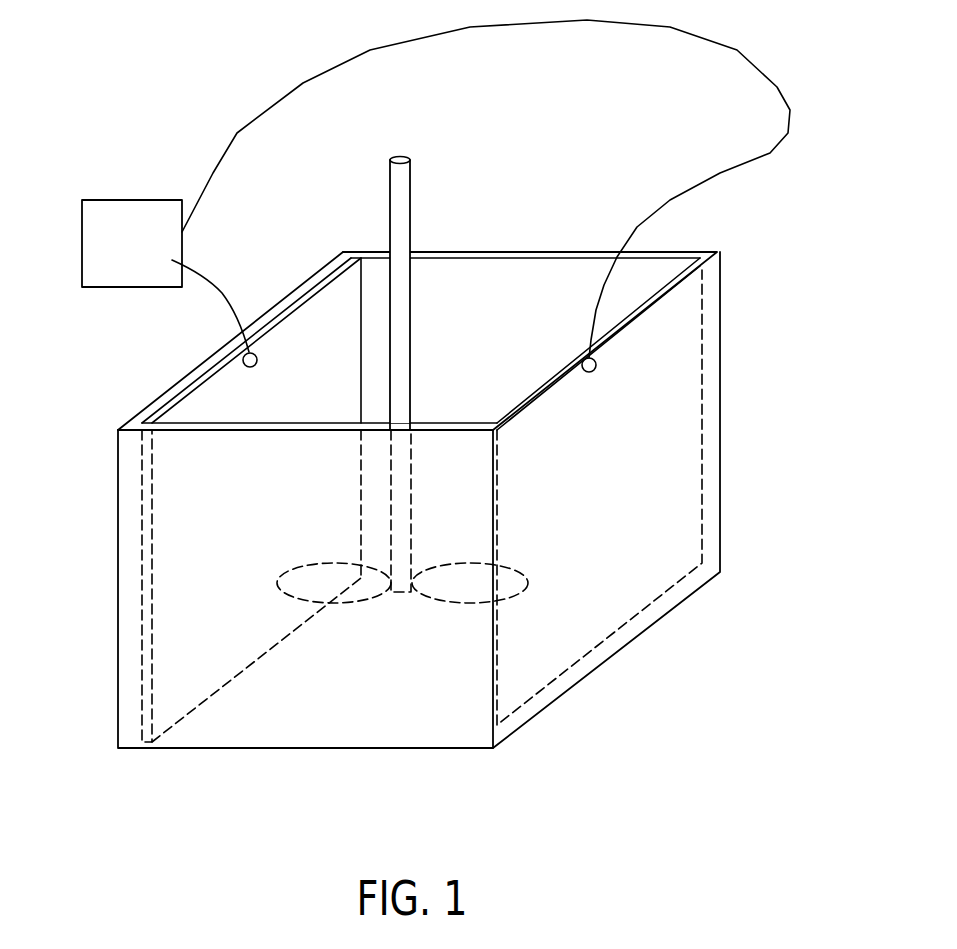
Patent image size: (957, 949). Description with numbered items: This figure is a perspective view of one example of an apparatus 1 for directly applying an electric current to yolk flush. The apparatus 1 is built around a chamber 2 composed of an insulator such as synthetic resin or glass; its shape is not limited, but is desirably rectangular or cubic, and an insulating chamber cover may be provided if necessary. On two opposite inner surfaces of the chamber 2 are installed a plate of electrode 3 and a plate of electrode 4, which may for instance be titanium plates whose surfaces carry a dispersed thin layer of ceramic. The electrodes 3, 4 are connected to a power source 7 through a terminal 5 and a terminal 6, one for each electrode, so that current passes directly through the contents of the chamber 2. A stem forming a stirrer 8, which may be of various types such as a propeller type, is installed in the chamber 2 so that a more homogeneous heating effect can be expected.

The apparatus for directly applying an electric current 1 is at (449, 384).
The chamber 2 is at (530, 256).
The plate of electrode 3 is at (307, 318).
The plate of electrode 4 is at (578, 361).
The terminal 5 is at (243, 358).
The terminal 6 is at (596, 362).
The power source 7 is at (143, 261).
The stirrer 8 is at (398, 208).